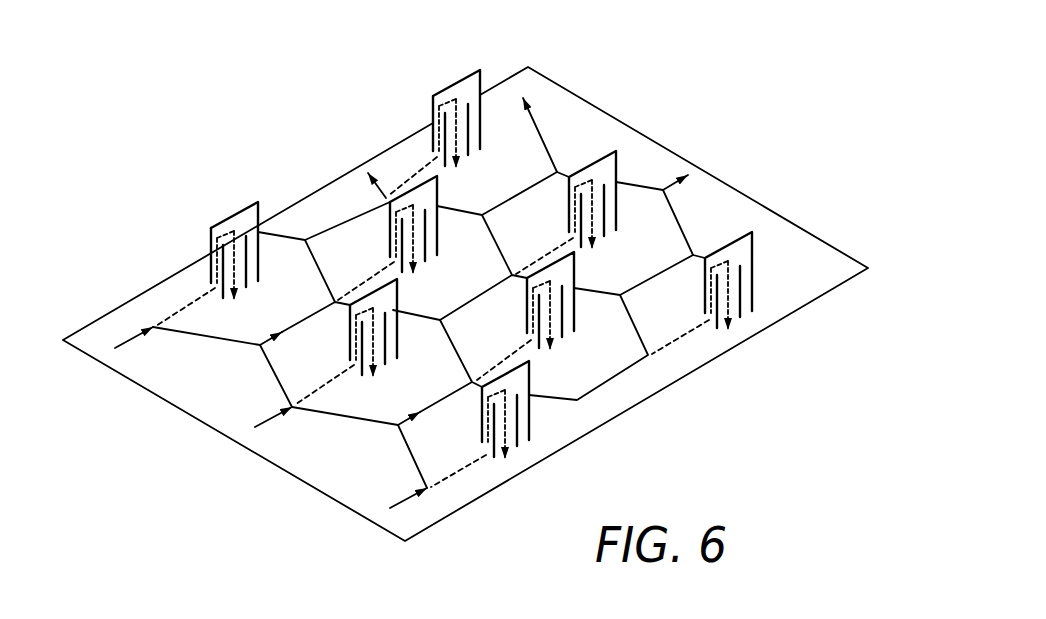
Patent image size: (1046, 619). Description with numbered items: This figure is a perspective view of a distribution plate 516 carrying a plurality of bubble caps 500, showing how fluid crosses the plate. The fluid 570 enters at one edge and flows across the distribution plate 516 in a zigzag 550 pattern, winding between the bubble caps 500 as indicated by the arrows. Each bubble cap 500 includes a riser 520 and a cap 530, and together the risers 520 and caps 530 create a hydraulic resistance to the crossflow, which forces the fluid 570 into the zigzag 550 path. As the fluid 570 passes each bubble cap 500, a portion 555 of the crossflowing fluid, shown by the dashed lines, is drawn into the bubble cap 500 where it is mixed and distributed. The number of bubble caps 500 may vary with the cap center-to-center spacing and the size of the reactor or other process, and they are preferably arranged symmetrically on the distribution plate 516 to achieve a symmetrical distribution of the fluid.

The bubble cap 500 is at (459, 72).
The distribution plate 516 is at (815, 268).
The riser 520 is at (468, 140).
The cap 530 is at (212, 228).
The zigzag pattern 550 is at (355, 418).
The portion of the crossflowing fluid 555 is at (360, 287).
The fluid 570 is at (263, 417).